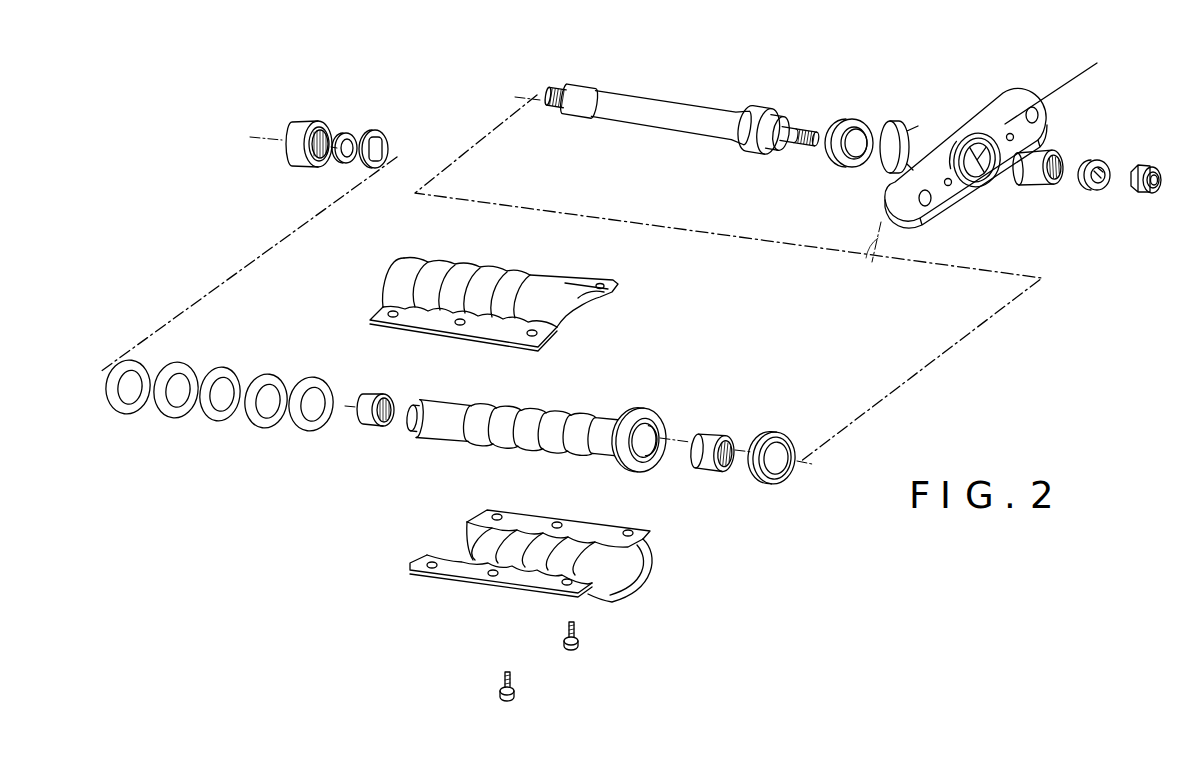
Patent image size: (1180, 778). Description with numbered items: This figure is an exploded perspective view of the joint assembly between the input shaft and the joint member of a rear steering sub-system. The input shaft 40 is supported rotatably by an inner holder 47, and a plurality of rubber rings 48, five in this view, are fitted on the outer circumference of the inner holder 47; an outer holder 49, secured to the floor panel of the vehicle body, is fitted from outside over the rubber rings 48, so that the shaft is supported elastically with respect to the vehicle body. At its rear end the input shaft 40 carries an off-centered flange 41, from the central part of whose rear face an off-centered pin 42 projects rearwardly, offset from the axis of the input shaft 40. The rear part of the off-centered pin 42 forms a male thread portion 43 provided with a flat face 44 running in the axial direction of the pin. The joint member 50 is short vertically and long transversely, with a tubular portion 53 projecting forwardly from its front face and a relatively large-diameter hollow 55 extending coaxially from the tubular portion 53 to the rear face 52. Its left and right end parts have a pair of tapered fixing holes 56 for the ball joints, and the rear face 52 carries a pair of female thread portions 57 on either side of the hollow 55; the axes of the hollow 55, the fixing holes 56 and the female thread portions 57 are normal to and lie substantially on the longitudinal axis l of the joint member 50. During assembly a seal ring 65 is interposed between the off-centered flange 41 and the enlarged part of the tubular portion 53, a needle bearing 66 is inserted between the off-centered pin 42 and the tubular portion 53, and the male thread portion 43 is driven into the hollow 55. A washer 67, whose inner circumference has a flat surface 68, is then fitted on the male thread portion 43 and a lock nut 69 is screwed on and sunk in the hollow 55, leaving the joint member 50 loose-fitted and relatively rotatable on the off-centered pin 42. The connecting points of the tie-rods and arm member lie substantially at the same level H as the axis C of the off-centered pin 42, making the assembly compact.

The input shaft 40 is at (676, 104).
The off-centered flange 41 is at (766, 151).
The off-centered pin 42 is at (779, 124).
The male thread portion 43 is at (793, 144).
The flat face 44 is at (803, 130).
The inner holder 47 is at (560, 420).
The rubber rings 48 is at (300, 428).
The outer holder 49 is at (614, 286).
The joint member 50 is at (965, 110).
The rear face 52 is at (931, 212).
The tubular portion 53 is at (911, 122).
The hollow 55 is at (986, 130).
The tapered fixing holes 56 is at (1042, 122).
The female thread portions 57 is at (1011, 133).
The seal ring 65 is at (850, 118).
The needle bearing 66 is at (1033, 184).
The washer 67 is at (1104, 188).
The flat surface 68 is at (1106, 172).
The lock nut 69 is at (1149, 193).
The axis of the off-centered pin C is at (985, 182).
The level H is at (1059, 88).
The longitudinal axis of the joint member l is at (873, 264).